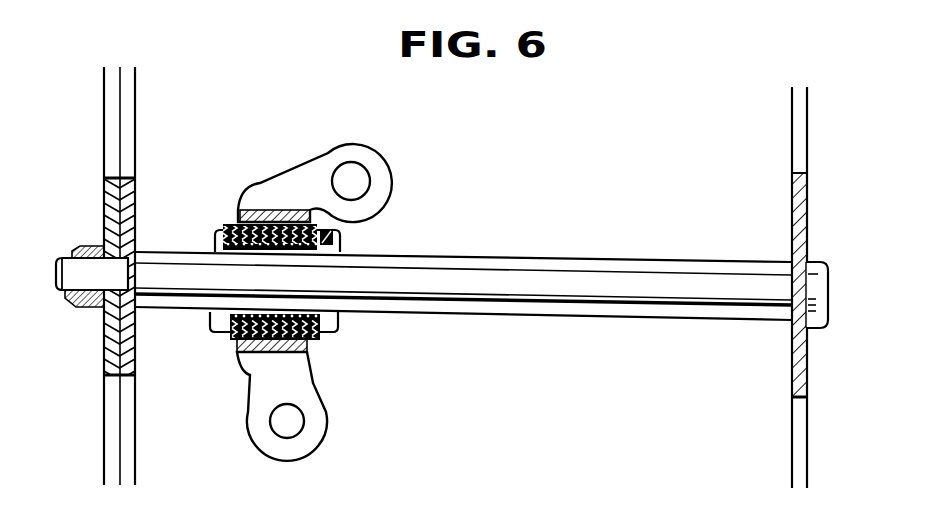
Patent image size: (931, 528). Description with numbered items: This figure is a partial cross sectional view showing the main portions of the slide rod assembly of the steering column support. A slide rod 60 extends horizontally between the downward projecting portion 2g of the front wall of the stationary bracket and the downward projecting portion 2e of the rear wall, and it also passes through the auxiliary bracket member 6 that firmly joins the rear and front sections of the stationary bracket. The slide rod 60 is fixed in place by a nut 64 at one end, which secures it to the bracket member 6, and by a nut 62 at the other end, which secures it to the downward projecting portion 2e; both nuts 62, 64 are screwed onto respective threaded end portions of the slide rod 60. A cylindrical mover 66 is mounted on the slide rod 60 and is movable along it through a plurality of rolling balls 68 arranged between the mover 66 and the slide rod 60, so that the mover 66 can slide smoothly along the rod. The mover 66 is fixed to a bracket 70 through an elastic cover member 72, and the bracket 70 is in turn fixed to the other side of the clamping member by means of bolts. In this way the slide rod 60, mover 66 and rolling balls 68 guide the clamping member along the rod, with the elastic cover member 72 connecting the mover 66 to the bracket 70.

The auxiliary bracket member 6 is at (108, 415).
The downward projecting portion 2g is at (105, 200).
The downward projecting portion 2e is at (790, 197).
The nut 64 is at (74, 254).
The slide rod 60 is at (532, 315).
The nut 62 is at (829, 292).
The cylindrical mover 66 is at (225, 232).
The rolling balls 68 is at (238, 252).
The bracket 70 is at (318, 173).
The elastic cover member 72 is at (232, 342).